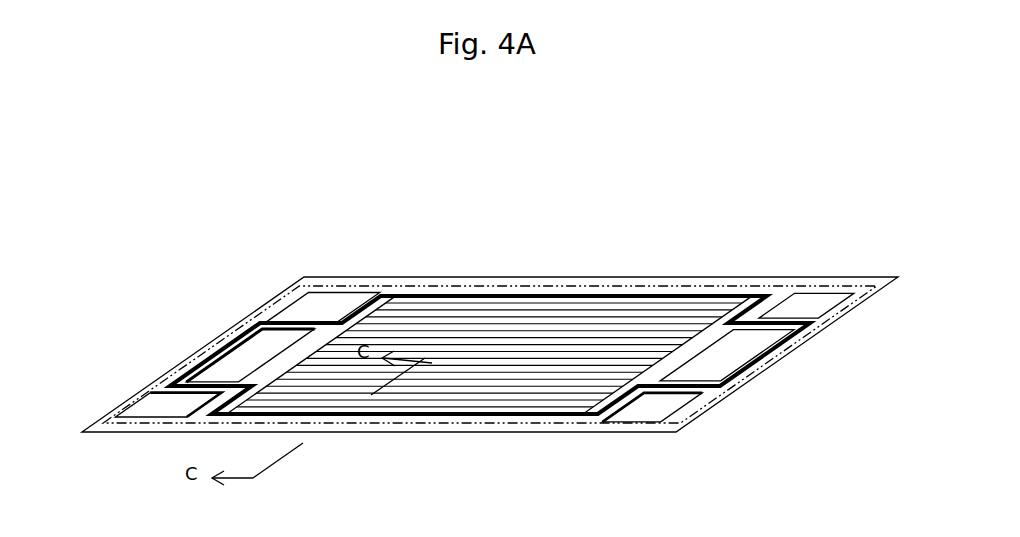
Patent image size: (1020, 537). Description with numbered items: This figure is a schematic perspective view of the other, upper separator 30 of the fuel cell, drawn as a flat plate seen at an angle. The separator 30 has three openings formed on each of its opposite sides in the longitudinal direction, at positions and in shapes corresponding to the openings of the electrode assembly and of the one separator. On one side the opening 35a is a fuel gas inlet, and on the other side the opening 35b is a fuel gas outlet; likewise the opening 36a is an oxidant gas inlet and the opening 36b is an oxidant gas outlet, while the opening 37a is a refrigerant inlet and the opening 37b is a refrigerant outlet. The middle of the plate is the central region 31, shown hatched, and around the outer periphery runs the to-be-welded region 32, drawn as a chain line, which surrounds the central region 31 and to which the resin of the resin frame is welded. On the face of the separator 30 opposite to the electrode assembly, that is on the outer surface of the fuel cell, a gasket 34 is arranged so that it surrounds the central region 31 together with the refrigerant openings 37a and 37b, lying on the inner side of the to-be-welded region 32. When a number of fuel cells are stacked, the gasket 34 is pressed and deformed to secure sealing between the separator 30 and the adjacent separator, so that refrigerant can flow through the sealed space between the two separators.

The other separator 30 is at (295, 261).
The central region 31 is at (427, 373).
The to-be-welded region 32 is at (511, 417).
The gasket 34 is at (440, 287).
The opening (fuel gas inlet) 35a is at (800, 299).
The opening (fuel gas outlet) 35b is at (172, 403).
The opening (oxidant gas inlet) 36a is at (663, 395).
The opening (oxidant gas outlet) 36b is at (320, 305).
The opening (refrigerant inlet) 37a is at (722, 352).
The opening (refrigerant outlet) 37b is at (247, 355).